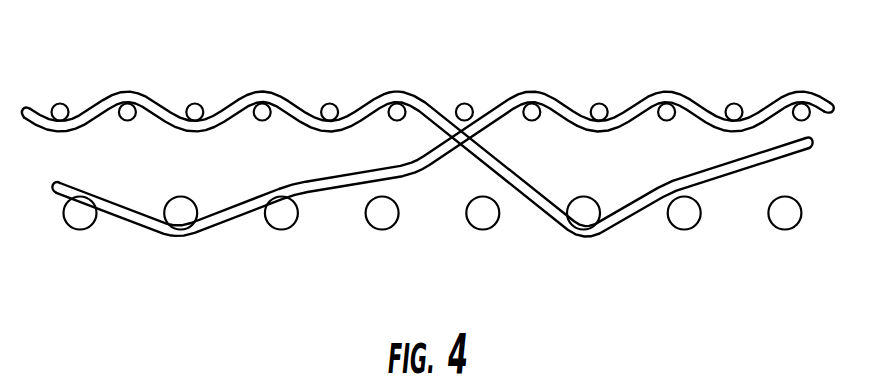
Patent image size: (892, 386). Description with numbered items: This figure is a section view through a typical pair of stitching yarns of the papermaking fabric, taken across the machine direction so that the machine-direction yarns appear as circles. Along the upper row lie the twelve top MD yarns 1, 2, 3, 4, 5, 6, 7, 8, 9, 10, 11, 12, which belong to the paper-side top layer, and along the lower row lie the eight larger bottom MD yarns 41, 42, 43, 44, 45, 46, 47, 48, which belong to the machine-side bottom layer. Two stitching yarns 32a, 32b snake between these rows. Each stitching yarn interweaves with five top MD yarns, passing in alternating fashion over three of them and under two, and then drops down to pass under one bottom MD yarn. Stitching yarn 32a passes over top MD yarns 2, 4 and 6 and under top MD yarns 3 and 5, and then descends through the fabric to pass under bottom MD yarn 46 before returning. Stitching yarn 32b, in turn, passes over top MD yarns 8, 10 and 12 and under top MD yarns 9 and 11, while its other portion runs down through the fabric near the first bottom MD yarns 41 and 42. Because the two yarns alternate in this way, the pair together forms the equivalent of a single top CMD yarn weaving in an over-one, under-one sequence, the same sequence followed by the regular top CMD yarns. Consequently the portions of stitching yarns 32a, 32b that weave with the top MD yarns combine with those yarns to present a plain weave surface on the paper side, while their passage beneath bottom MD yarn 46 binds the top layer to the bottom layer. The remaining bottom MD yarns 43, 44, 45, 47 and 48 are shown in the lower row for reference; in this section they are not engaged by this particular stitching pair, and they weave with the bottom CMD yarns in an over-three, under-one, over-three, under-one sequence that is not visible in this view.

The top MD yarn 1 is at (62, 117).
The top MD yarn 2 is at (128, 116).
The top MD yarn 3 is at (195, 116).
The top MD yarn 4 is at (262, 116).
The top MD yarn 5 is at (330, 116).
The top MD yarn 6 is at (397, 116).
The top MD yarn 7 is at (464, 116).
The top MD yarn 8 is at (532, 116).
The top MD yarn 9 is at (599, 116).
The top MD yarn 10 is at (667, 116).
The top MD yarn 11 is at (734, 116).
The top MD yarn 12 is at (802, 116).
The stitching yarn 32a is at (90, 112).
The stitching yarn 32b is at (819, 101).
The bottom MD yarn 41 is at (83, 217).
The bottom MD yarn 42 is at (184, 217).
The bottom MD yarn 43 is at (285, 217).
The bottom MD yarn 44 is at (386, 217).
The bottom MD yarn 45 is at (486, 217).
The bottom MD yarn 46 is at (587, 217).
The bottom MD yarn 47 is at (687, 217).
The bottom MD yarn 48 is at (787, 217).